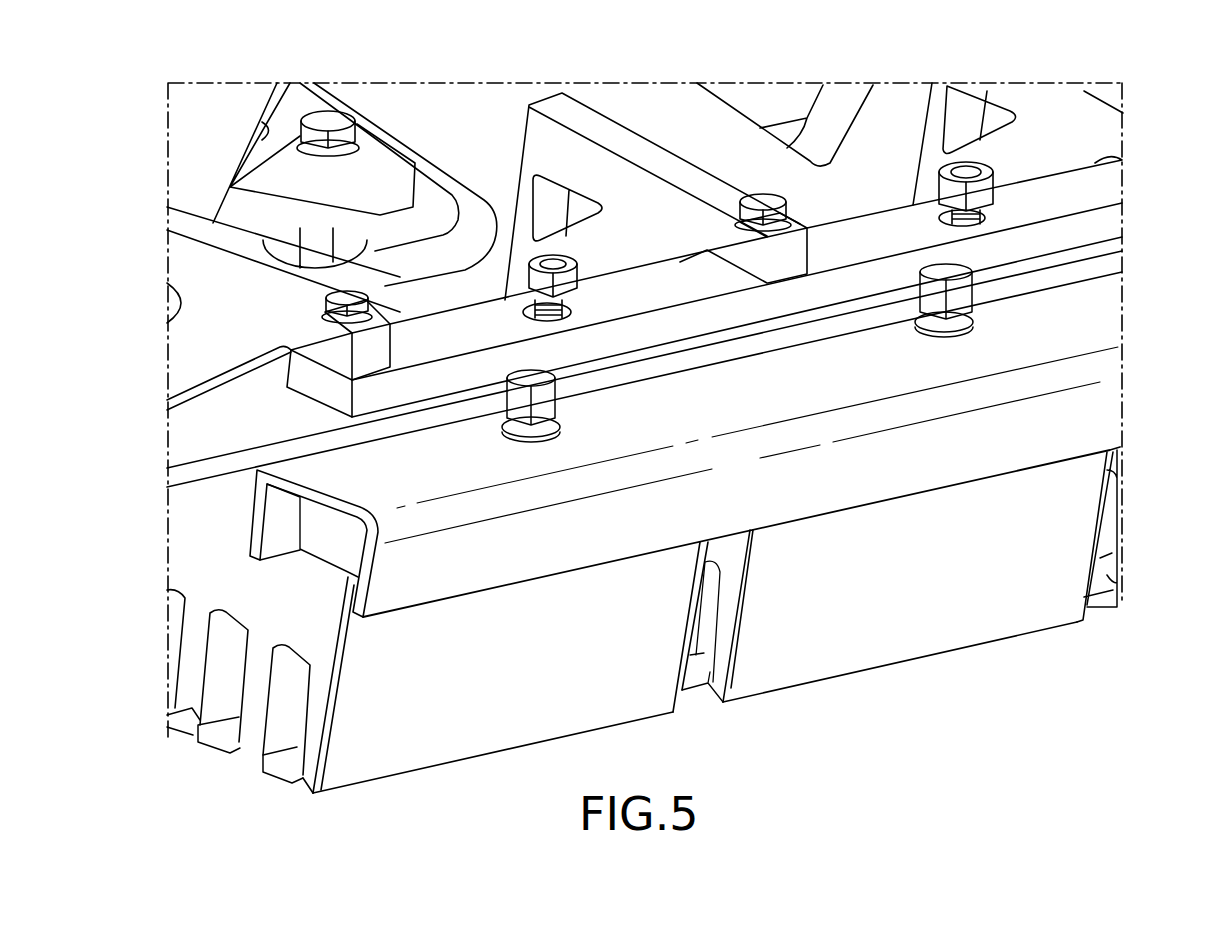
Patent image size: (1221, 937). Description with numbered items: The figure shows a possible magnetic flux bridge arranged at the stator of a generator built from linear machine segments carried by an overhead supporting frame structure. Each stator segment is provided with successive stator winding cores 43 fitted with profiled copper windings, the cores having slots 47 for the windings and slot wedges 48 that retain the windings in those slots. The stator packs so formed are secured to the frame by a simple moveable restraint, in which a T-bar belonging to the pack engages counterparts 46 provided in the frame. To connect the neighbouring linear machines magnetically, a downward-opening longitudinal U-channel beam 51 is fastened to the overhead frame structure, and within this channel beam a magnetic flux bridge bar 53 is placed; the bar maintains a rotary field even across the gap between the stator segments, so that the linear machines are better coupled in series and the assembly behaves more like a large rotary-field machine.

The stator winding core 43 is at (1122, 592).
The counterpart 46 is at (285, 452).
The slot 47 is at (227, 652).
The slot wedge 48 is at (218, 727).
The U-channel beam 51 is at (1117, 392).
The magnetic flux bridge bar 53 is at (255, 500).